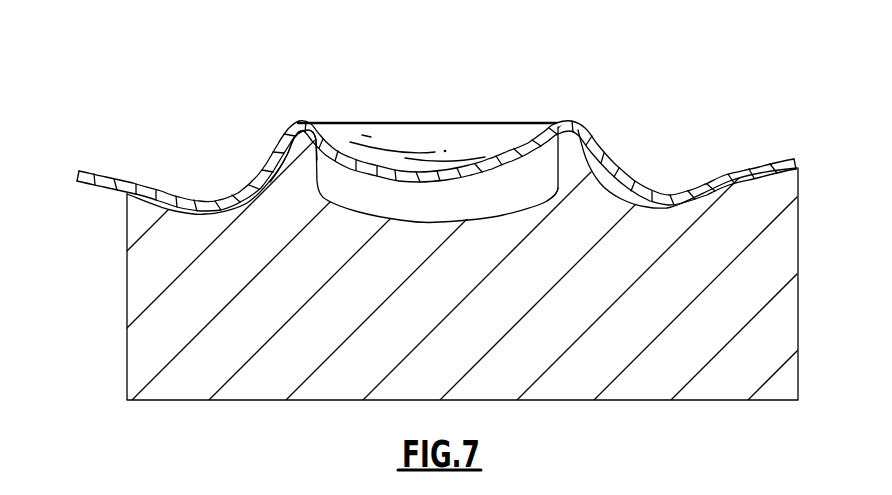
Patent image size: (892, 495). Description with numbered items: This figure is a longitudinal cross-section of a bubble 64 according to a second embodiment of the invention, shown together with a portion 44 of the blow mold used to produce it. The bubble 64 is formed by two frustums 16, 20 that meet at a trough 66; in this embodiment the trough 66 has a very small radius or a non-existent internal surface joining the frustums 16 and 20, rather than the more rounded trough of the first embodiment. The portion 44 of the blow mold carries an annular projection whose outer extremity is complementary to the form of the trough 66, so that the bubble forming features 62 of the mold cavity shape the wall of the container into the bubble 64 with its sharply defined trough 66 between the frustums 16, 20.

The frustum 16 is at (539, 140).
The frustum 20 is at (587, 127).
The portion of the blow mold 44 is at (148, 319).
The bubble forming features 62 is at (586, 163).
The bubble 64 is at (264, 160).
The trough 66 is at (323, 133).